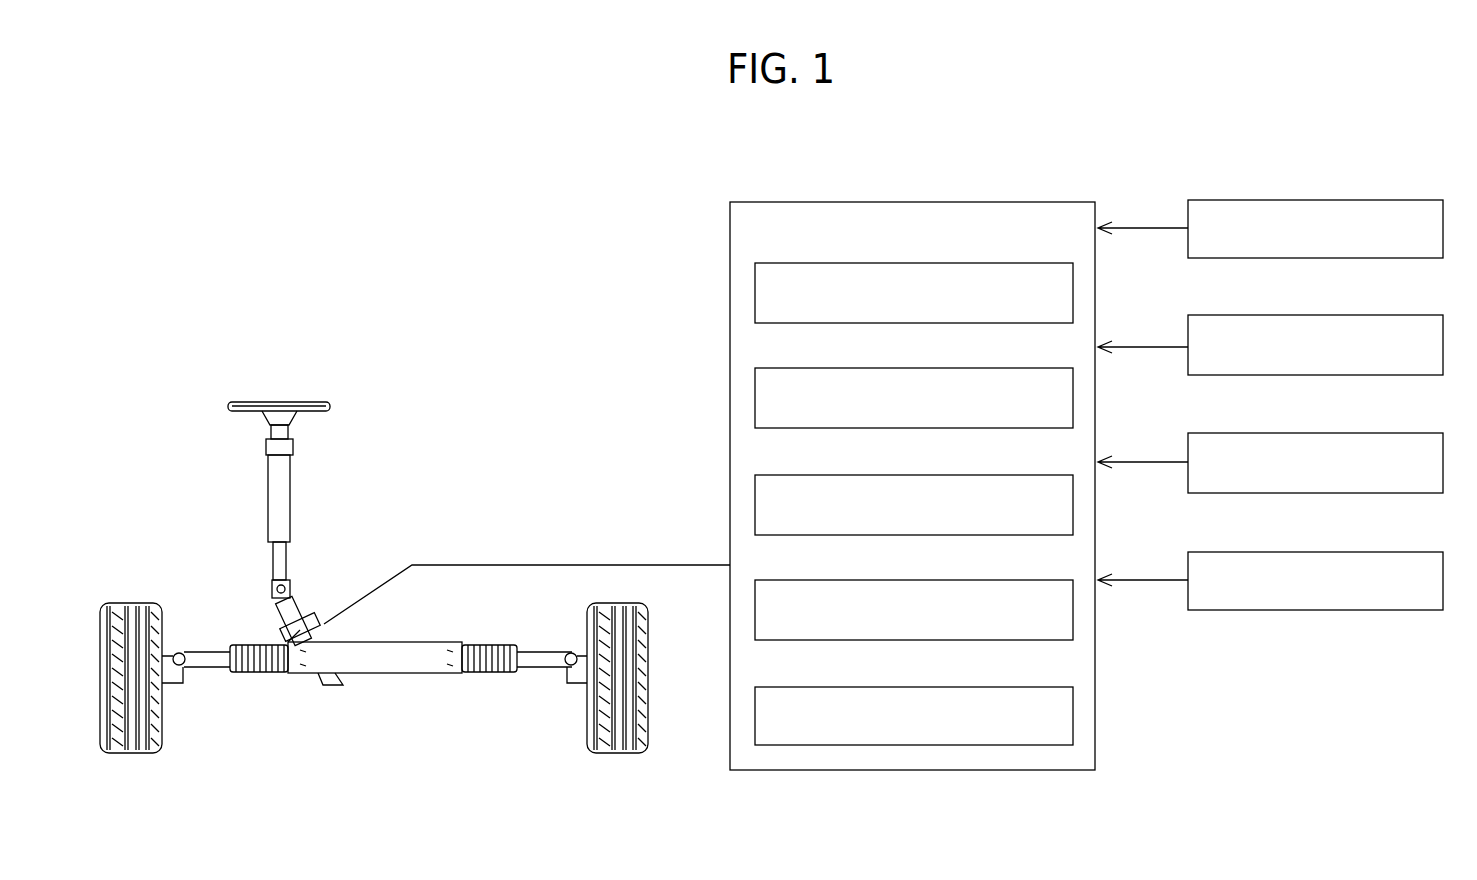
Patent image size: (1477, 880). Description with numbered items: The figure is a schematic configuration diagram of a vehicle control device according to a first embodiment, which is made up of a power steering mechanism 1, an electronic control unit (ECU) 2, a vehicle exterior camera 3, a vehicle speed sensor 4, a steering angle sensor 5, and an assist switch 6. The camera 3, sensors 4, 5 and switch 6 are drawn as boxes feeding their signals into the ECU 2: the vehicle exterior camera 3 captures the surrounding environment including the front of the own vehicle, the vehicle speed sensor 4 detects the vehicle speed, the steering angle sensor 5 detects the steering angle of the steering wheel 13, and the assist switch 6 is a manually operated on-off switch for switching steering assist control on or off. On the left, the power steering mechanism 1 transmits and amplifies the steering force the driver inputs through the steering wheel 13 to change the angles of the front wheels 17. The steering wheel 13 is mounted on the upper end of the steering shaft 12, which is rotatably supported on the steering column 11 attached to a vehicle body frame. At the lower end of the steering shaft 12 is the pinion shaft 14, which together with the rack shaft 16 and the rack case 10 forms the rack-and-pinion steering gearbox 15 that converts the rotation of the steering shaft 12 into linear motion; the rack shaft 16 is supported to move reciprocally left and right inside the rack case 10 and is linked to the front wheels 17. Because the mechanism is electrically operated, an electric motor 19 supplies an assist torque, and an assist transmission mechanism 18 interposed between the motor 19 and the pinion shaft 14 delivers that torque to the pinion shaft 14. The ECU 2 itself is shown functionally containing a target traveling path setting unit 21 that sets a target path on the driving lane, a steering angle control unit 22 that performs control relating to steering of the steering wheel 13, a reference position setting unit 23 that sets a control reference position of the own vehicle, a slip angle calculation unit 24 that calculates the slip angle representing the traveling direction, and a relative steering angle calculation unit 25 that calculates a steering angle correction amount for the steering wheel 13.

The power steering mechanism 1 is at (378, 390).
The electronic control unit 2 is at (955, 200).
The vehicle exterior camera 3 is at (1425, 200).
The vehicle speed sensor 4 is at (1425, 315).
The steering angle sensor 5 is at (1425, 433).
The assist switch 6 is at (1425, 552).
The rack case 10 is at (363, 676).
The steering column 11 is at (267, 487).
The steering shaft 12 is at (273, 567).
The steering wheel 13 is at (294, 402).
The pinion shaft 14 is at (306, 598).
The steering gearbox 15 is at (312, 682).
The rack shaft 16 is at (447, 650).
The front wheels 17 is at (162, 721).
The assist transmission mechanism 18 is at (284, 638).
The electric motor 19 is at (328, 624).
The target traveling path setting unit 21 is at (1003, 263).
The steering angle control unit 22 is at (1003, 368).
The reference position setting unit 23 is at (1003, 475).
The slip angle calculation unit 24 is at (1003, 580).
The relative steering angle calculation unit 25 is at (1003, 687).